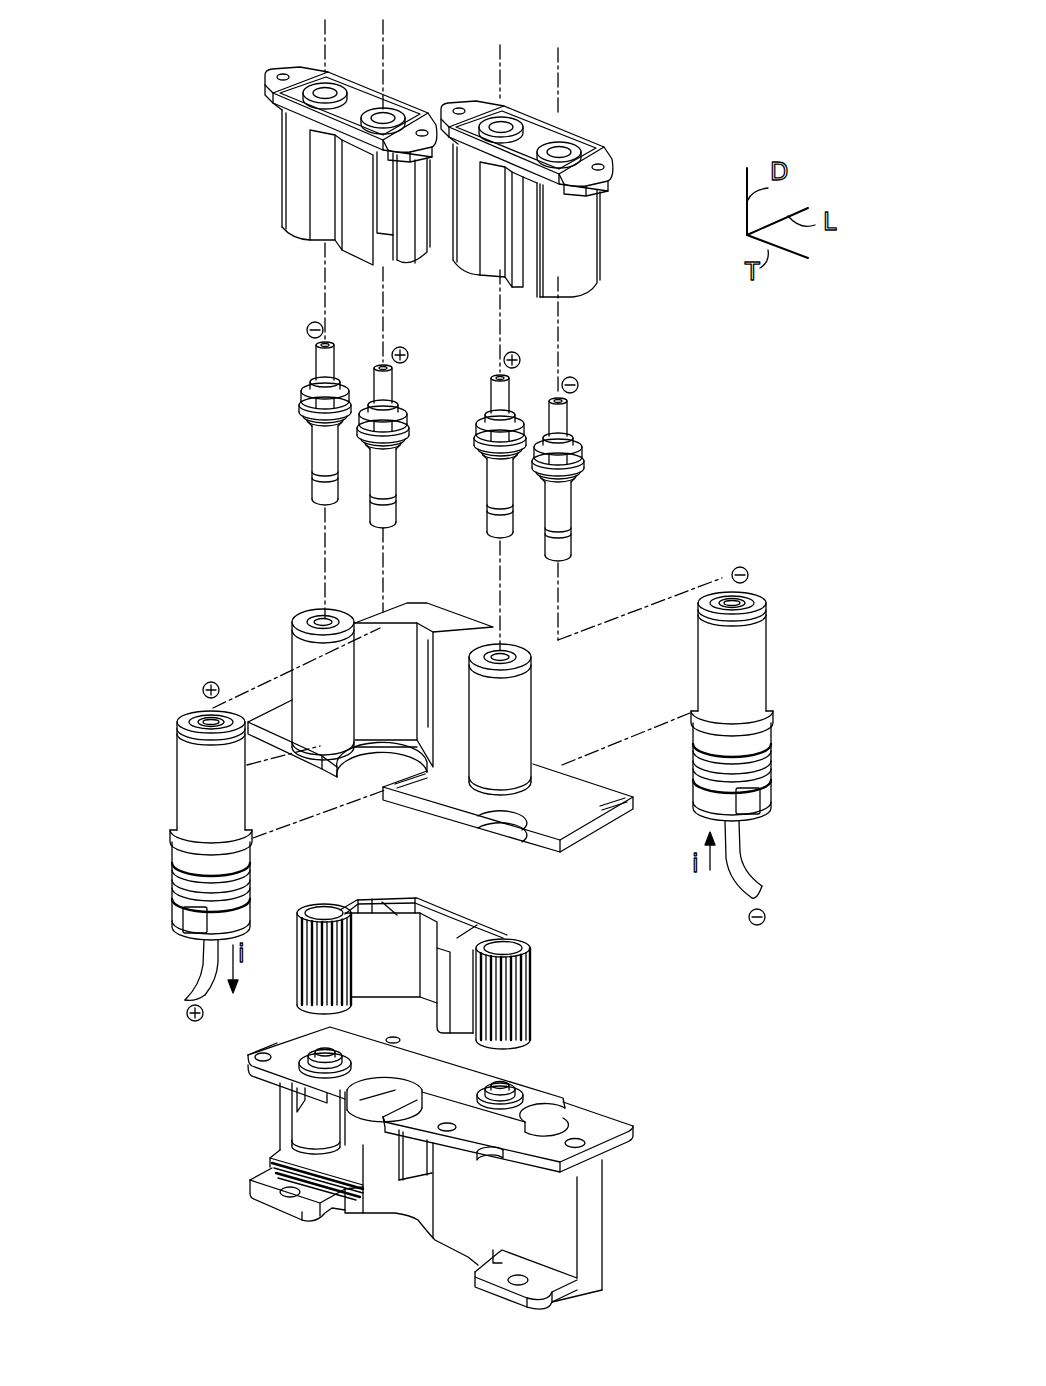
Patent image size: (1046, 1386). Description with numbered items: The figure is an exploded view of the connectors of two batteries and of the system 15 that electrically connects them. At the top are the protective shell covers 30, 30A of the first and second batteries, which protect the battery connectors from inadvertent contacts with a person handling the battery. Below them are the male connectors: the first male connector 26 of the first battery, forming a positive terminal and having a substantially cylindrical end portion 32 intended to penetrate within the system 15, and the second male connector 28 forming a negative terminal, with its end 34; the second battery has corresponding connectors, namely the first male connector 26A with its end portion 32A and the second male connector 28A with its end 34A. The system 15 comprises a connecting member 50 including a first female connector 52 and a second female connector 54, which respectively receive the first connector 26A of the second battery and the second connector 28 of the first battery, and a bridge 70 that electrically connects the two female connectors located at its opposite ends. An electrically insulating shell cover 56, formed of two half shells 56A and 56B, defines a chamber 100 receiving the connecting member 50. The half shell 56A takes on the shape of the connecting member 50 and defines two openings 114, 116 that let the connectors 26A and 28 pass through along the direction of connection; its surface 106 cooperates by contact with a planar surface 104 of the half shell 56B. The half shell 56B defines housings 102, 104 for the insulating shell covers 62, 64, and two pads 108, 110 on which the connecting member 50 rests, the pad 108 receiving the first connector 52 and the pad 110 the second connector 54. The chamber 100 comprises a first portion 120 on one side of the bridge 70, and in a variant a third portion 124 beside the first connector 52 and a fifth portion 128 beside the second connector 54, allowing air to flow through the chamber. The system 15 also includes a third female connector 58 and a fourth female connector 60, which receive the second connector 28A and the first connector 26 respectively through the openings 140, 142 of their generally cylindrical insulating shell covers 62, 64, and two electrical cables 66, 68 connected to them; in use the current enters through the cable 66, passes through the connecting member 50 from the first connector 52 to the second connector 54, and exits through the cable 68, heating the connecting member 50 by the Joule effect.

The system 15 is at (145, 795).
The protective shell cover 30 is at (358, 104).
The protective shell cover 30A is at (572, 243).
The second male connector 28 is at (318, 452).
The terminal shaft end 34 is at (322, 490).
The first male connector 26 is at (383, 475).
The end portion 32 is at (383, 504).
The first male connector 26A is at (497, 492).
The terminal shaft end 32A is at (498, 520).
The second male connector 28A is at (560, 512).
The terminal shaft end 34A is at (565, 545).
The third female connector 58 is at (757, 694).
The insulating shell cover 62 is at (742, 682).
The electrical cable 66 is at (733, 873).
The opening 140 is at (718, 584).
The fourth female connector 60 is at (185, 815).
The insulating shell cover 64 is at (192, 815).
The electrical cable 68 is at (208, 966).
The opening 142 is at (201, 706).
The shell cover 56 is at (608, 850).
The half shell 56A is at (440, 737).
The half shell 56B is at (437, 1156).
The opening 116 is at (322, 617).
The opening 114 is at (505, 650).
The surface 106 is at (514, 850).
The connecting member 50 is at (443, 941).
The first female connector 52 is at (500, 952).
The second female connector 54 is at (322, 918).
The bridge 70 is at (445, 888).
The chamber 100 is at (455, 1085).
The housing 102 is at (580, 1102).
The housing 104 is at (330, 1123).
The pad 108 is at (505, 1083).
The pad 110 is at (320, 1050).
The first portion 120 is at (399, 1044).
The third portion 124 is at (530, 1095).
The fifth portion 128 is at (290, 1062).